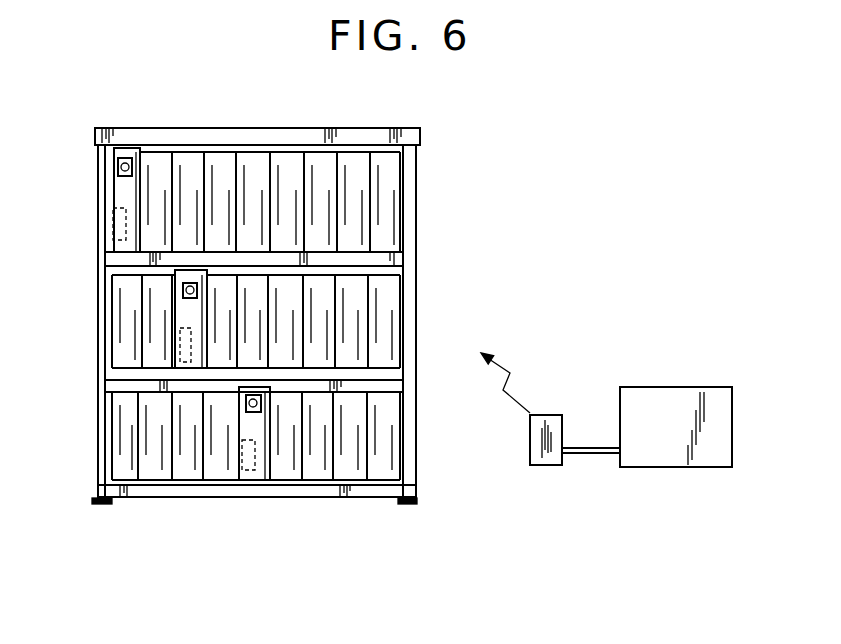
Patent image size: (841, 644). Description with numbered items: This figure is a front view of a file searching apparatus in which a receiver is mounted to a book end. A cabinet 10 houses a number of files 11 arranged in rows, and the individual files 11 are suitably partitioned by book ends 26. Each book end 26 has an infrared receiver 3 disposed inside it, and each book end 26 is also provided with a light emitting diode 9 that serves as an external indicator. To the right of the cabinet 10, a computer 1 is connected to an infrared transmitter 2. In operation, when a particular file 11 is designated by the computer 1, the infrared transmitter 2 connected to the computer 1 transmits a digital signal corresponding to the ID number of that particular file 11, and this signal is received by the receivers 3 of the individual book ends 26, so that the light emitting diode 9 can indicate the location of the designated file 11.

The computer 1 is at (642, 395).
The infrared transmitter 2 is at (548, 420).
The infrared receiver 3 is at (103, 219).
The light emitting diode 9 is at (128, 148).
The cabinet 10 is at (420, 140).
The file 11 is at (153, 165).
The book end 26 is at (120, 193).